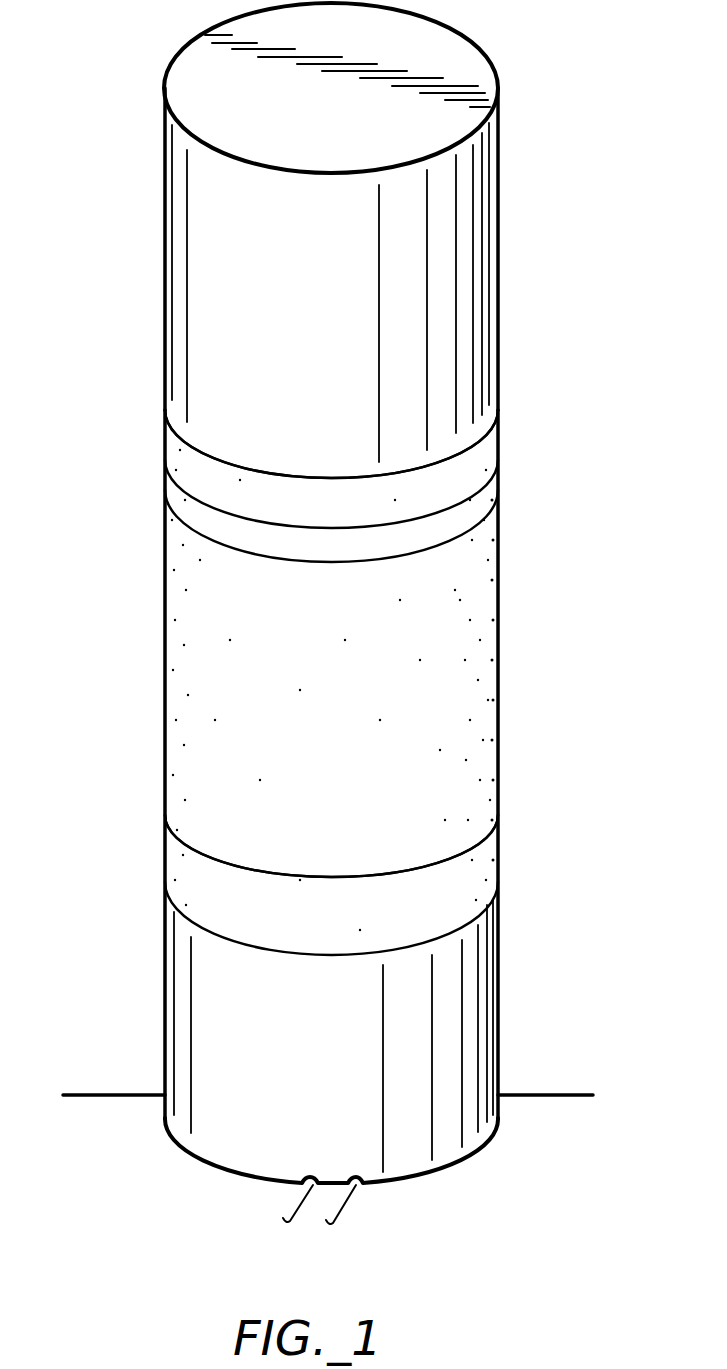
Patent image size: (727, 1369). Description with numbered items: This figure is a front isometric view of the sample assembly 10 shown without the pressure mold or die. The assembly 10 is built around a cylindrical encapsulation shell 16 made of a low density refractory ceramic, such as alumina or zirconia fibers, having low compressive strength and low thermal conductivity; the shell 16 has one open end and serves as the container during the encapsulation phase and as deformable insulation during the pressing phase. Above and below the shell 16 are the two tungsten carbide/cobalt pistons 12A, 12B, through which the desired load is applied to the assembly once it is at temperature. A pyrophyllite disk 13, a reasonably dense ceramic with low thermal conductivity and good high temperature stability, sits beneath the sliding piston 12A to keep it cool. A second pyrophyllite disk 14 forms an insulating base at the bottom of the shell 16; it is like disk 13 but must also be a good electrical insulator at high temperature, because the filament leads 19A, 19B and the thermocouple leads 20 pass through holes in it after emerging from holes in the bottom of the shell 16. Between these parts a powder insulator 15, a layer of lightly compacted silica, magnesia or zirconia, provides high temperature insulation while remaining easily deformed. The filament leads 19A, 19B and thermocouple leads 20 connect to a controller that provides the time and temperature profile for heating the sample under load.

The assembly 10 is at (152, 890).
The tungsten carbide/cobalt piston 12A is at (480, 283).
The tungsten carbide/cobalt piston 12B is at (482, 977).
The pyrophyllite disk 13 is at (490, 440).
The pyrophyllite disk 14 is at (492, 847).
The powder insulator 15 is at (490, 480).
The encapsulation shell 16 is at (492, 612).
The filament lead 19A is at (110, 1093).
The filament lead 19B is at (557, 1090).
The thermocouple leads 20 is at (283, 1221).